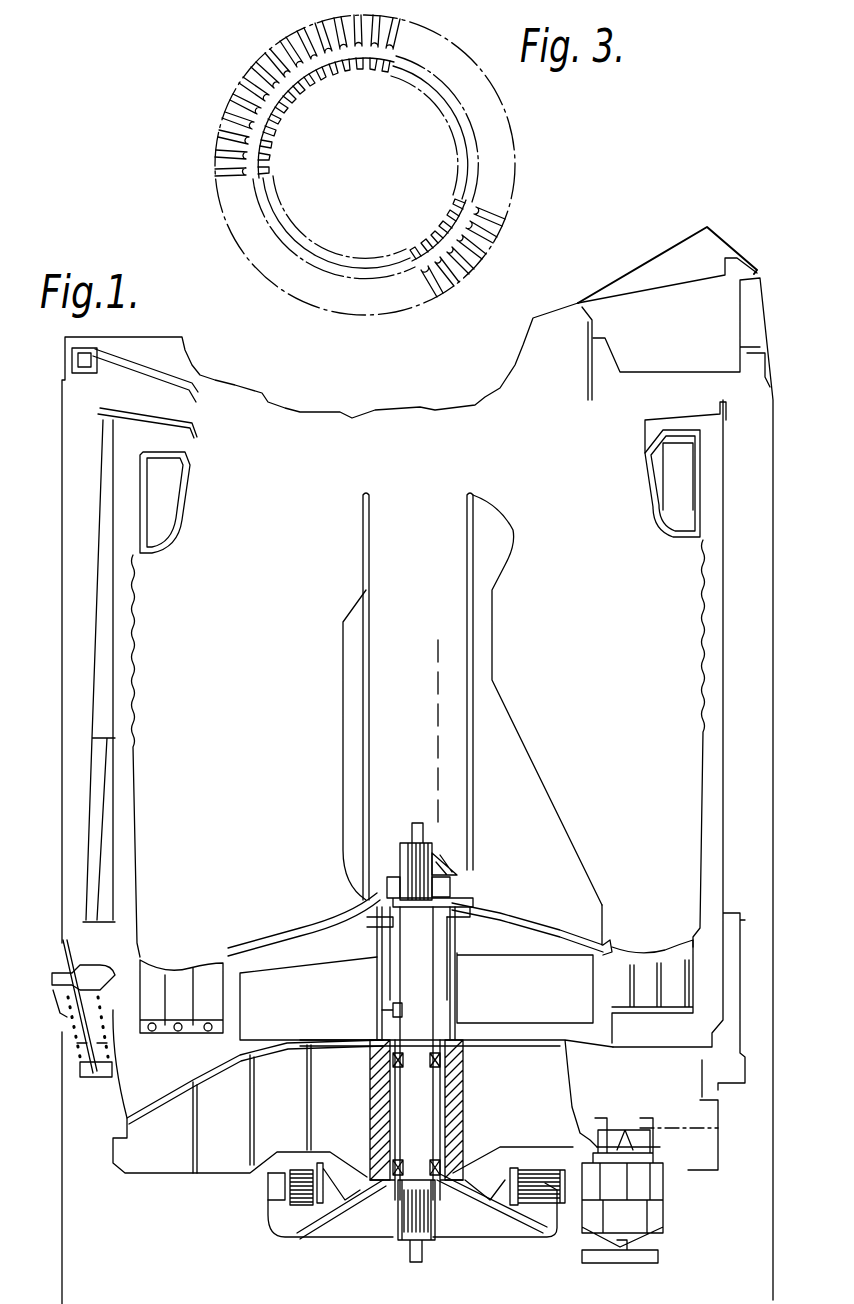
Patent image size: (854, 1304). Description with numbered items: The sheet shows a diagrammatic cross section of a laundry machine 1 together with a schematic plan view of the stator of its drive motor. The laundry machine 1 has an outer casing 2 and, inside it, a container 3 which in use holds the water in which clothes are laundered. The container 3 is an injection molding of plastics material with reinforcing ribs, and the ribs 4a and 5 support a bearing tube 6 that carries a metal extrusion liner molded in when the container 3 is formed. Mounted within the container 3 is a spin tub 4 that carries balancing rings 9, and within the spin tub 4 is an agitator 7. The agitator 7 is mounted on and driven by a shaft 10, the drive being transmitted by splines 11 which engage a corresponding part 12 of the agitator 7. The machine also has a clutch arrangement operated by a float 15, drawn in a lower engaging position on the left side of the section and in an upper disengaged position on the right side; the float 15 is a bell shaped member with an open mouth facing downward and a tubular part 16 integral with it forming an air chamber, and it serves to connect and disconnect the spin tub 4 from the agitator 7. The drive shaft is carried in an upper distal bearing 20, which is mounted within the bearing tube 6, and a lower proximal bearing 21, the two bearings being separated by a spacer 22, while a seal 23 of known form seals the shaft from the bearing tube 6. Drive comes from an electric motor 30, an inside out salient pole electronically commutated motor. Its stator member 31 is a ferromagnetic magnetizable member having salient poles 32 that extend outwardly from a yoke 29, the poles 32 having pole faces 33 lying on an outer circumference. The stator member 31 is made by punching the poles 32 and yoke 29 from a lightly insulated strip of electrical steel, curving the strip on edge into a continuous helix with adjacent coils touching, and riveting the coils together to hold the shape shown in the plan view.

In FIG. 1, the laundry machine 1 is at (393, 765).
In FIG. 1, the outer casing 2 is at (55, 418).
In FIG. 1, the container 3 is at (115, 800).
In FIG. 1, the spin tub 4 is at (133, 660).
In FIG. 1, the rib 4a is at (220, 1150).
In FIG. 1, the rib 5 is at (188, 1150).
In FIG. 1, the bearing tube 6 is at (372, 1112).
In FIG. 1, the agitator 7 is at (497, 733).
In FIG. 1, the balancing rings 9 is at (172, 520).
In FIG. 1, the shaft 10 is at (386, 886).
In FIG. 1, the splines 11 is at (442, 876).
In FIG. 1, the corresponding part 12 is at (455, 893).
In FIG. 1, the float 15 is at (332, 1002).
In FIG. 1, the tubular part 16 is at (460, 960).
In FIG. 1, the upper distal bearing 20 is at (380, 1075).
In FIG. 1, the lower proximal bearing 21 is at (465, 1162).
In FIG. 1, the spacer 22 is at (468, 1085).
In FIG. 1, the seal 23 is at (393, 1030).
In FIG. 3, the yoke 29 is at (413, 63).
In FIG. 1, the electric motor 30 is at (268, 1228).
In FIG. 3, the stator member 31 is at (500, 123).
In FIG. 3, the salient poles 32 is at (245, 116).
In FIG. 3, the pole faces 33 is at (300, 27).